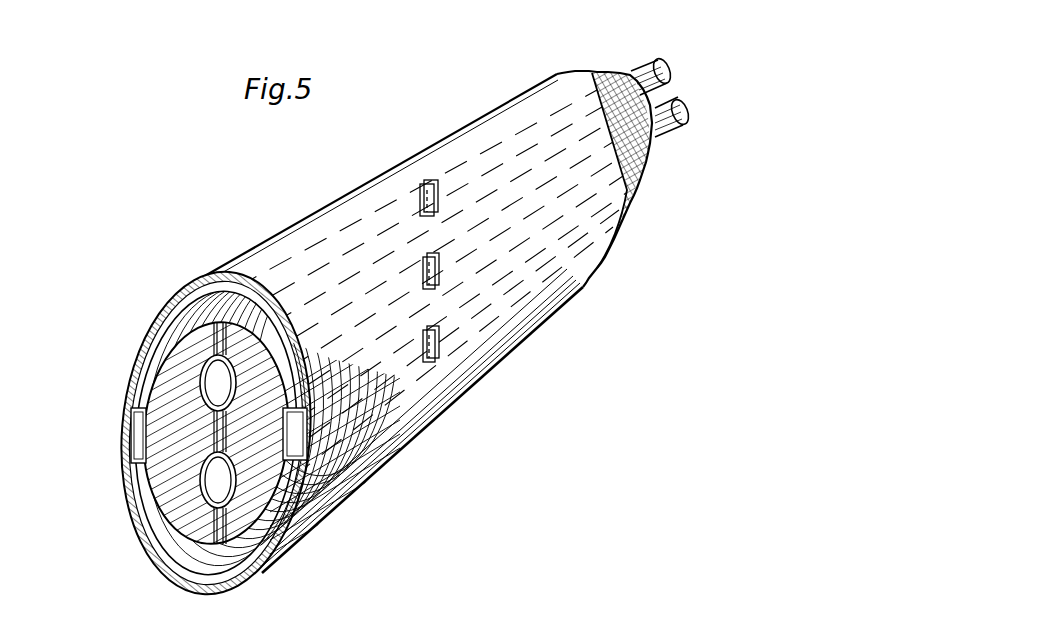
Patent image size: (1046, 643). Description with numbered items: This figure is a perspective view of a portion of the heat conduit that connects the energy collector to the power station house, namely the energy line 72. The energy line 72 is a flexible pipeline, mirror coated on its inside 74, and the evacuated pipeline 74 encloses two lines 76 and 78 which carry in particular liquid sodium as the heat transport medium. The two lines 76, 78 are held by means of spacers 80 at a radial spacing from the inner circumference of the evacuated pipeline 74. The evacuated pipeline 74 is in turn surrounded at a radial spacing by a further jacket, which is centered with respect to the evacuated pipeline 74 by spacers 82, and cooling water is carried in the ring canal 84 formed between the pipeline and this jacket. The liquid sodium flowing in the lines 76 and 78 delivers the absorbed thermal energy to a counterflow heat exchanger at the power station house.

The energy line 72 is at (329, 184).
The evacuated pipeline 74 is at (160, 556).
The line 76 is at (285, 518).
The line 78 is at (243, 350).
The spacers 80 is at (428, 178).
The spacers 82 is at (132, 416).
The ring canal 84 is at (288, 547).